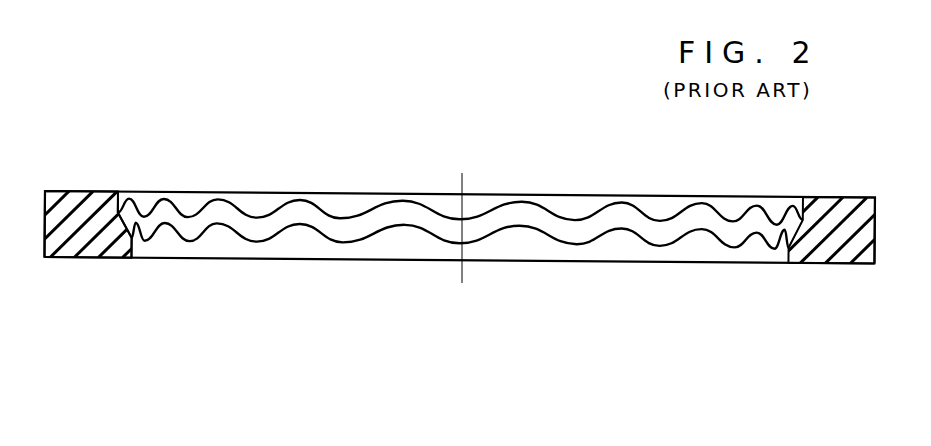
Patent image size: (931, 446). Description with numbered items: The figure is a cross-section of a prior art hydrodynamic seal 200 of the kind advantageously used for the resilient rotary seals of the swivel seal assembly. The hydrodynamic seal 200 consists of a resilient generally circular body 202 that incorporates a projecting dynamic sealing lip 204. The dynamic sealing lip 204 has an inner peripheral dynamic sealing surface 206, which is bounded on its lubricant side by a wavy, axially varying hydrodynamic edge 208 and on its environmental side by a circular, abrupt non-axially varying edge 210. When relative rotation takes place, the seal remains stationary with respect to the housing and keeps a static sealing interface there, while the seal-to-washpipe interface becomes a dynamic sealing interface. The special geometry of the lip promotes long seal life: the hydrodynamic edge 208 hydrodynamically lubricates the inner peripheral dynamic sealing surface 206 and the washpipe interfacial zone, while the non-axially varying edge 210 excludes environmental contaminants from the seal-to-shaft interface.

The hydrodynamic seal 200 is at (340, 158).
The resilient generally circular body 202 is at (85, 232).
The projecting dynamic sealing lip 204 is at (124, 245).
The inner peripheral dynamic sealing surface 206 is at (222, 247).
The axially varying hydrodynamic edge 208 is at (207, 228).
The non-axially varying edge 210 is at (315, 258).